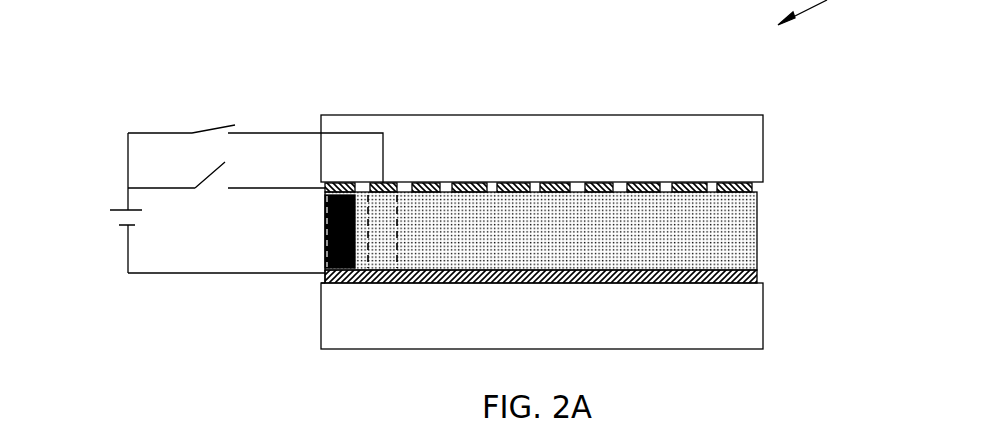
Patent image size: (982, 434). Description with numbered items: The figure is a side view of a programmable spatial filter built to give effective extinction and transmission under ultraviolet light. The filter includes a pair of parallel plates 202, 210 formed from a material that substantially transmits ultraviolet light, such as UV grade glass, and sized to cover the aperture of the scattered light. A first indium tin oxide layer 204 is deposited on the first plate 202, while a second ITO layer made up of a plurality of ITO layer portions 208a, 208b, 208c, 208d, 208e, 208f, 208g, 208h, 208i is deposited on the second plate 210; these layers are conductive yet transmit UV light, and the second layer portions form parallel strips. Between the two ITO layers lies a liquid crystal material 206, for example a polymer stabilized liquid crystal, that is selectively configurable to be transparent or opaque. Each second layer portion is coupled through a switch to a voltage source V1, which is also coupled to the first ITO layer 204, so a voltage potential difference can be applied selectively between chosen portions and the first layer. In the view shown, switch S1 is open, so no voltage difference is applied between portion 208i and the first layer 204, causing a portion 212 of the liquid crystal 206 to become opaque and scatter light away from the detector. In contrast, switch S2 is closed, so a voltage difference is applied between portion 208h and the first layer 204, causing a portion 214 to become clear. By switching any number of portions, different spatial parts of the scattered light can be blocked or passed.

The plate 202 is at (740, 318).
The first ITO layer 204 is at (755, 273).
The liquid crystal material 206 is at (740, 237).
The ITO layer portion 208a is at (687, 183).
The ITO layer portion 208b is at (640, 183).
The ITO layer portion 208c is at (590, 183).
The ITO layer portion 208d is at (553, 183).
The ITO layer portion 208e is at (512, 183).
The ITO layer portion 208f is at (467, 183).
The ITO layer portion 208g is at (418, 183).
The ITO layer portion 208h is at (397, 183).
The ITO layer portion 208i is at (342, 183).
The plate 210 is at (755, 162).
The opaque portion of liquid crystal 212 is at (325, 247).
The clear portion of liquid crystal 214 is at (325, 283).
The voltage source V1 is at (107, 203).
The switch S1 is at (226, 217).
The switch S2 is at (255, 154).